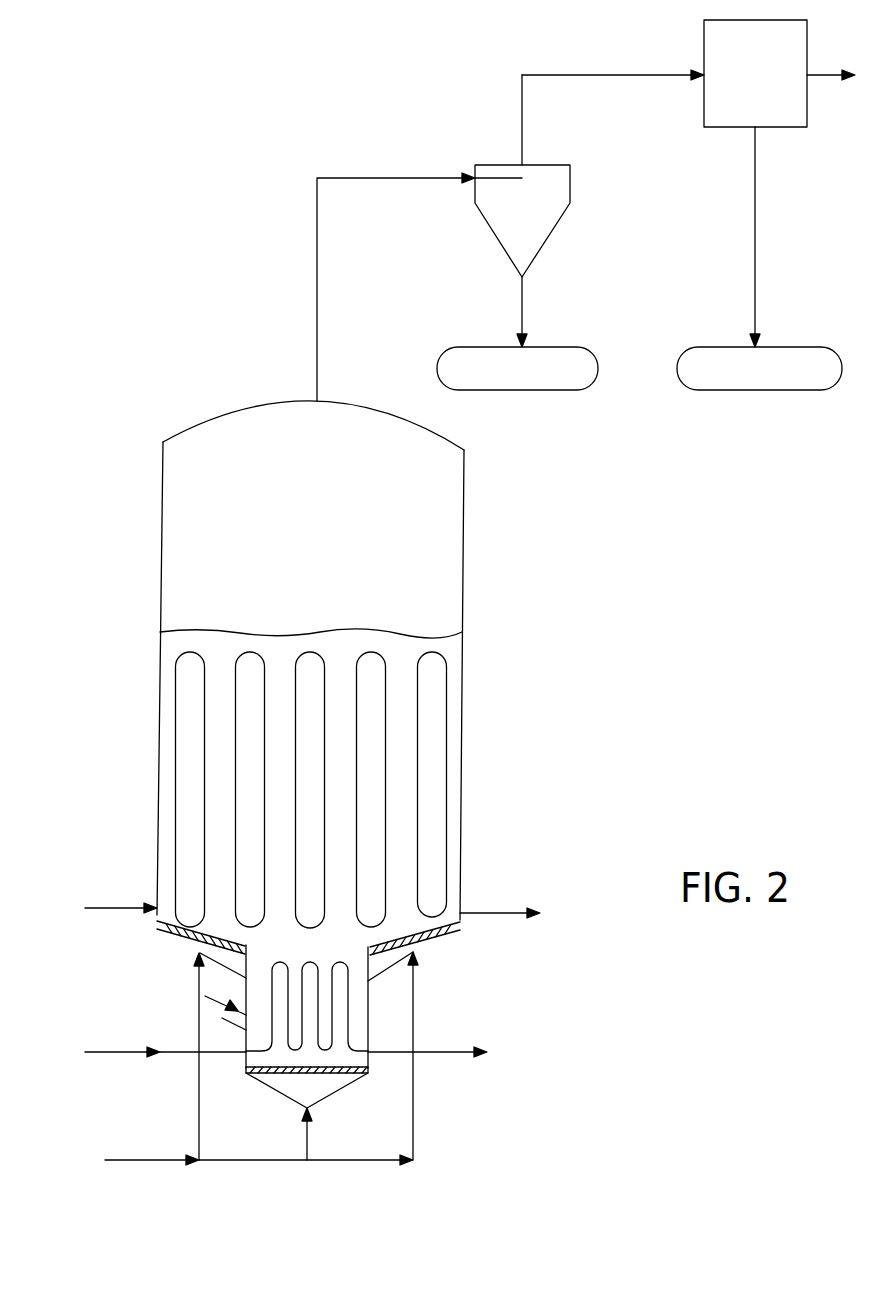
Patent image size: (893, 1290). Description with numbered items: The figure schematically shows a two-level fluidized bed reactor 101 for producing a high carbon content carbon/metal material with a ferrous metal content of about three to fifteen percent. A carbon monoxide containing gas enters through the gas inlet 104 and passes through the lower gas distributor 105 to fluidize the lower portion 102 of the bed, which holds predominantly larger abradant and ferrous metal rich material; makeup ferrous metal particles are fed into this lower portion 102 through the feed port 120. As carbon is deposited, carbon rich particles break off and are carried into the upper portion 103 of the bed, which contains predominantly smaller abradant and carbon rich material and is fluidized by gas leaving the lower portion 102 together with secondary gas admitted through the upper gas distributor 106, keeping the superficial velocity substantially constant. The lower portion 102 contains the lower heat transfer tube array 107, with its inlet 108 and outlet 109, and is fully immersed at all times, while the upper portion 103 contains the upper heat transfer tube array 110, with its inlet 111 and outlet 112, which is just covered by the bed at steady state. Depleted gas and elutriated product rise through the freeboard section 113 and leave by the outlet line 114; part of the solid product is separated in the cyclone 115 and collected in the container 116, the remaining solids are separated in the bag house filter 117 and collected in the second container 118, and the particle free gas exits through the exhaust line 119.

The two-level fluidized bed reactor 101 is at (474, 592).
The lower portion of the fluidized bed 102 is at (358, 1018).
The upper portion of the fluidized bed 103 is at (432, 795).
The gas inlet 104 is at (306, 1108).
The lower gas distributor 105 is at (375, 1074).
The upper gas distributor 106 is at (157, 926).
The lower heat transfer tube array 107 is at (348, 993).
The inlet of lower heat transfer tube array 108 is at (244, 1055).
The outlet of lower heat transfer tube array 109 is at (447, 1055).
The upper heat transfer tube array 110 is at (174, 817).
The inlet of upper heat transfer tube array 111 is at (106, 910).
The outlet of upper heat transfer tube array 112 is at (460, 906).
The freeboard section 113 is at (443, 552).
The outlet line 114 is at (318, 388).
The cyclone 115 is at (548, 227).
The container 116 is at (547, 347).
The bag house filter 117 is at (704, 36).
The second container 118 is at (787, 347).
The exhaust line 119 is at (817, 78).
The feed port 120 is at (230, 1022).